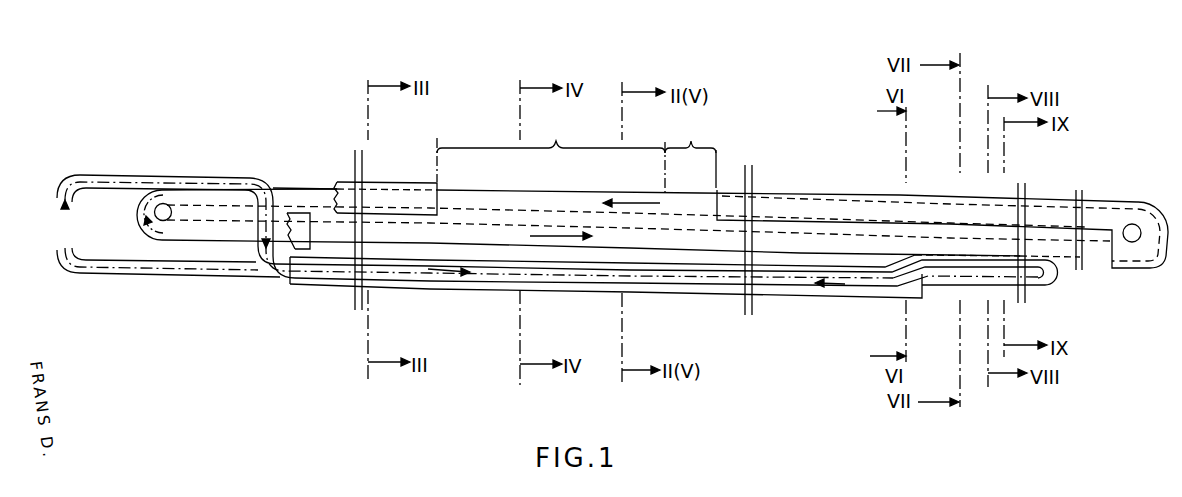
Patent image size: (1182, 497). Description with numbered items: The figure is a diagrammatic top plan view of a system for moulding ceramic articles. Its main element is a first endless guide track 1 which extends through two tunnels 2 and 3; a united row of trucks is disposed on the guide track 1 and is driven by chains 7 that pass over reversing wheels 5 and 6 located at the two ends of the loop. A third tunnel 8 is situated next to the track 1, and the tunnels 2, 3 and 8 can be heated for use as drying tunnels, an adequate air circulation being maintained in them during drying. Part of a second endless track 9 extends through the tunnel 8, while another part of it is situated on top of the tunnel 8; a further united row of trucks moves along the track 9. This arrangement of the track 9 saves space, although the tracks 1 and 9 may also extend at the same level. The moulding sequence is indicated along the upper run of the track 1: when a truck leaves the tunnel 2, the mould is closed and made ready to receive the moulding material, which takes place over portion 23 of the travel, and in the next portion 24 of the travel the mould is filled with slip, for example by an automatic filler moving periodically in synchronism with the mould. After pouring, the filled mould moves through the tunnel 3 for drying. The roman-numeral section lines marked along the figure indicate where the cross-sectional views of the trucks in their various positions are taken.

The first endless guide track 1 is at (697, 203).
The tunnel 2 is at (803, 198).
The tunnel 3 is at (395, 182).
The reversing wheel 5 is at (165, 207).
The reversing wheel 6 is at (1130, 242).
The chain 7 is at (285, 203).
The third tunnel 8 is at (289, 282).
The second endless track 9 is at (143, 263).
The portion of the travel 23 is at (690, 155).
The portion of the travel 24 is at (551, 150).